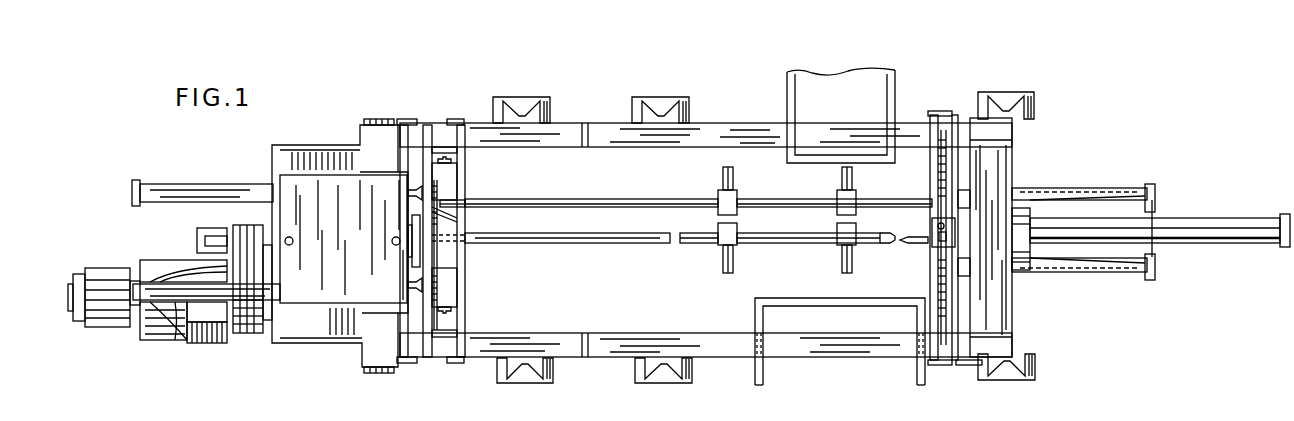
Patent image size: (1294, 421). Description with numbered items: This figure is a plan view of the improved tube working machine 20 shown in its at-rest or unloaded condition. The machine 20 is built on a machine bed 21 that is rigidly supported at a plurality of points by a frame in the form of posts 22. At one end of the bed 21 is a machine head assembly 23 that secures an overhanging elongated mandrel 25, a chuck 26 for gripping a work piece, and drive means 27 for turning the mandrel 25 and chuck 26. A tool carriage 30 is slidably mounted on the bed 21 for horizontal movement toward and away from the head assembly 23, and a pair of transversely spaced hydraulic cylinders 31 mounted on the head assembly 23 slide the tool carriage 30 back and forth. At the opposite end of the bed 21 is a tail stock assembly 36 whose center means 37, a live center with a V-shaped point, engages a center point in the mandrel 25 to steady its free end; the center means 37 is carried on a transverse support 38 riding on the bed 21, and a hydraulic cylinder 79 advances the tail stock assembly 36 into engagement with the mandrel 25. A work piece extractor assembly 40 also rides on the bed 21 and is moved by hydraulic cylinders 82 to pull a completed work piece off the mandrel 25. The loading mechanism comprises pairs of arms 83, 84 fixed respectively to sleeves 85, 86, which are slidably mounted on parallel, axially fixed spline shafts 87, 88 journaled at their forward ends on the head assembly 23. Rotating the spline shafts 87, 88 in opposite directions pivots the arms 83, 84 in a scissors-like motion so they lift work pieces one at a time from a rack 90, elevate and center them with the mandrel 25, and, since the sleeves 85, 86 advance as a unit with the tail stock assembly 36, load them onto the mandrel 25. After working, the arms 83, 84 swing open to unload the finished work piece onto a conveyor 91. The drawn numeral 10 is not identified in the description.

The apparatus 10 is at (477, 409).
The tube working machine 20 is at (541, 328).
The machine bed 21 is at (534, 146).
The posts 22 is at (537, 97).
The machine head assembly 23 is at (333, 130).
The mandrel 25 is at (588, 252).
The chuck 26 is at (465, 206).
The drive means 27 is at (137, 250).
The tool carriage 30 is at (422, 127).
The hydraulic cylinders 31 is at (205, 184).
The tail stock assembly 36 is at (1070, 166).
The center means 37 is at (918, 244).
The transverse support 38 is at (1000, 172).
The work piece extractor assembly 40 is at (938, 128).
The hydraulic cylinder 79 is at (1228, 222).
The hydraulic cylinders 82 is at (1125, 190).
The loader arms 83 is at (733, 178).
The loader arms 84 is at (737, 266).
The sleeve 85 is at (805, 187).
The sleeve 86 is at (826, 249).
The spline shaft 87 is at (630, 200).
The spline shaft 88 is at (703, 248).
The rack 90 is at (836, 298).
The conveyor 91 is at (787, 73).